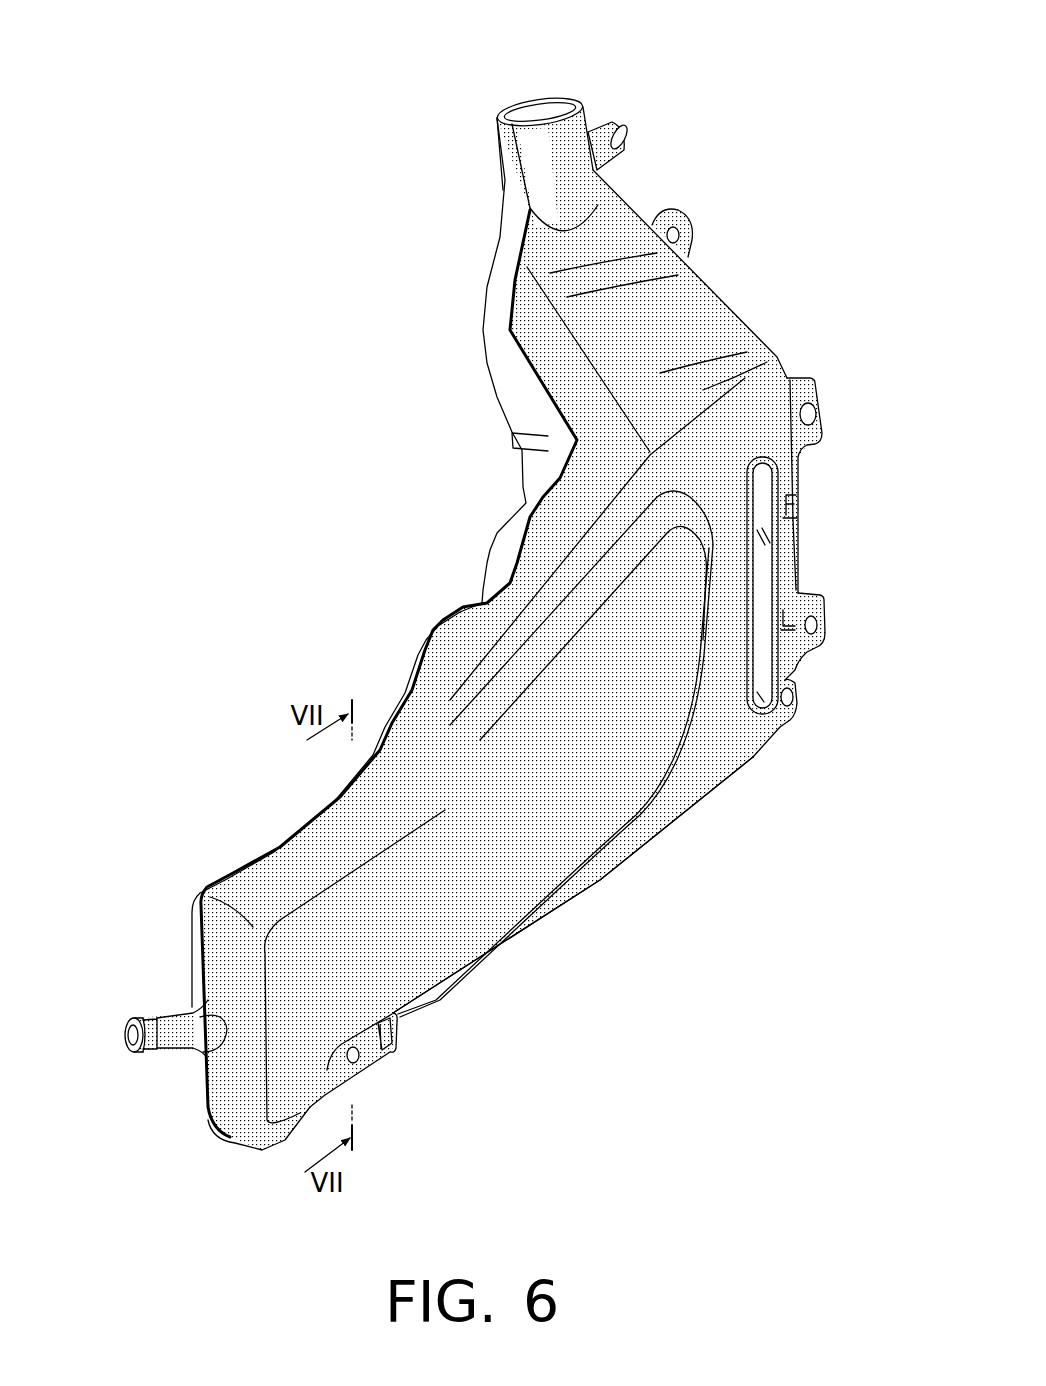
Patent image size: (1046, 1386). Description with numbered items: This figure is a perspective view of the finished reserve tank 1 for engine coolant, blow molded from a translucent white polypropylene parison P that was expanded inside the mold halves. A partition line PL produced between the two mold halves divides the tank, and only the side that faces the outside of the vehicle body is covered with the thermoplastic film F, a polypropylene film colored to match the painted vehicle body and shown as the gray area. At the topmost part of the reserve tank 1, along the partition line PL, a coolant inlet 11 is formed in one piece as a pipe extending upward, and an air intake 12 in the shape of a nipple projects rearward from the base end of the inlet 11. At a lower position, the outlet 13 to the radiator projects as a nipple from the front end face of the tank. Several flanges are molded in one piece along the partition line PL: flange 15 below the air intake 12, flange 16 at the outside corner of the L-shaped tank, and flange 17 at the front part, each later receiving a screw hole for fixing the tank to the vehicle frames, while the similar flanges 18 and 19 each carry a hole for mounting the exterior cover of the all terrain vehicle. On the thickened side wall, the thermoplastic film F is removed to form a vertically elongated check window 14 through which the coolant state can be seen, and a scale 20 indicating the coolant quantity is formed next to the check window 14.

The reserve tank 1 is at (709, 978).
The inlet 11 is at (548, 107).
The air intake 12 is at (625, 127).
The outlet 13 is at (145, 1022).
The check window 14 is at (758, 748).
The flange 15 is at (700, 235).
The flange 16 is at (797, 684).
The flange 17 is at (380, 1057).
The flange 18 is at (818, 432).
The flange 19 is at (828, 630).
The scale 20 is at (798, 612).
The parison P is at (503, 410).
The partition line PL is at (506, 290).
The thermoplastic film F is at (243, 897).